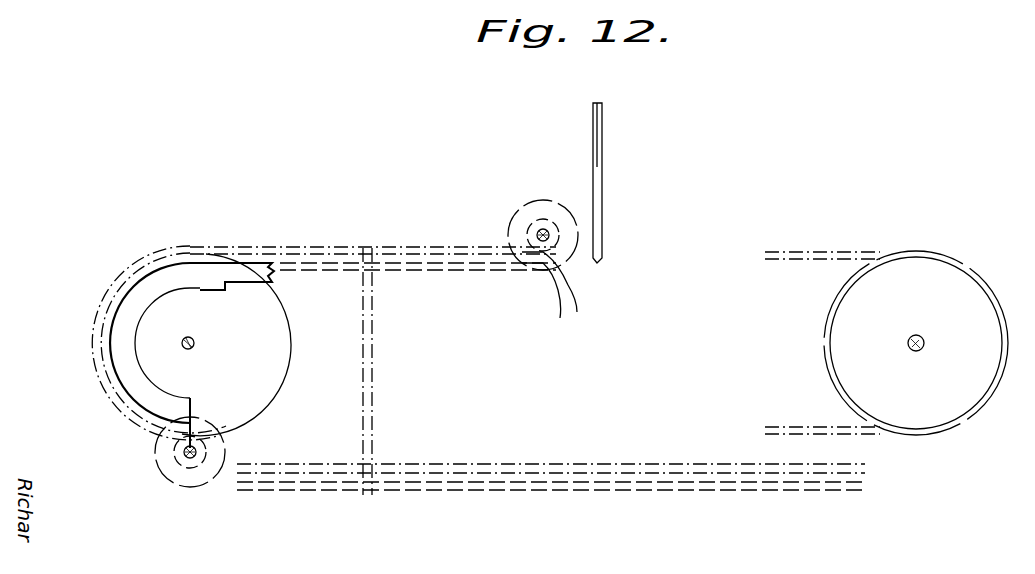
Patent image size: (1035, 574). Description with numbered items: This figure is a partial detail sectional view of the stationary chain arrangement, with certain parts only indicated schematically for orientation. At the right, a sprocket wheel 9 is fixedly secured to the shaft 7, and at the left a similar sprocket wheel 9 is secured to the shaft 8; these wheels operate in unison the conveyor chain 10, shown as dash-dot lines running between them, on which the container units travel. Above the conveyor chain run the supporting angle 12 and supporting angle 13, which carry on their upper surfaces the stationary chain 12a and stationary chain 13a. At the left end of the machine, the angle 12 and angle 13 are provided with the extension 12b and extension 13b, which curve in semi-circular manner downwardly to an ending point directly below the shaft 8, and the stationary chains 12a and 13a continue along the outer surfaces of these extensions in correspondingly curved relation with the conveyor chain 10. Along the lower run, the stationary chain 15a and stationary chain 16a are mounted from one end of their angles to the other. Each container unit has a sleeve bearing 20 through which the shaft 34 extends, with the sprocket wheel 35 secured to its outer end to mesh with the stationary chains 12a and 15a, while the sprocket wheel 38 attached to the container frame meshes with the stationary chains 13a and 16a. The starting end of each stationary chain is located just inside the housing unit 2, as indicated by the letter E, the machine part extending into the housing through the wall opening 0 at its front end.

The housing unit 2 is at (604, 124).
The wall opening 0 is at (590, 178).
The shaft 7 is at (925, 345).
The shaft 8 is at (184, 341).
The sprocket wheel 9 is at (268, 392).
The conveyor chain 10 is at (800, 259).
The supporting angle 12 is at (270, 272).
The stationary chain 12a is at (112, 402).
The extension 12b is at (122, 312).
The supporting angle 13 is at (208, 282).
The stationary chain 13a is at (135, 420).
The extension 13b is at (152, 386).
The stationary chain 15a is at (548, 465).
The stationary chain 16a is at (600, 485).
The sleeve bearing 20 is at (183, 456).
The shaft 34 is at (198, 453).
The sprocket wheel 35 is at (178, 468).
The sprocket wheel 38 is at (197, 488).
The starting end E is at (552, 294).